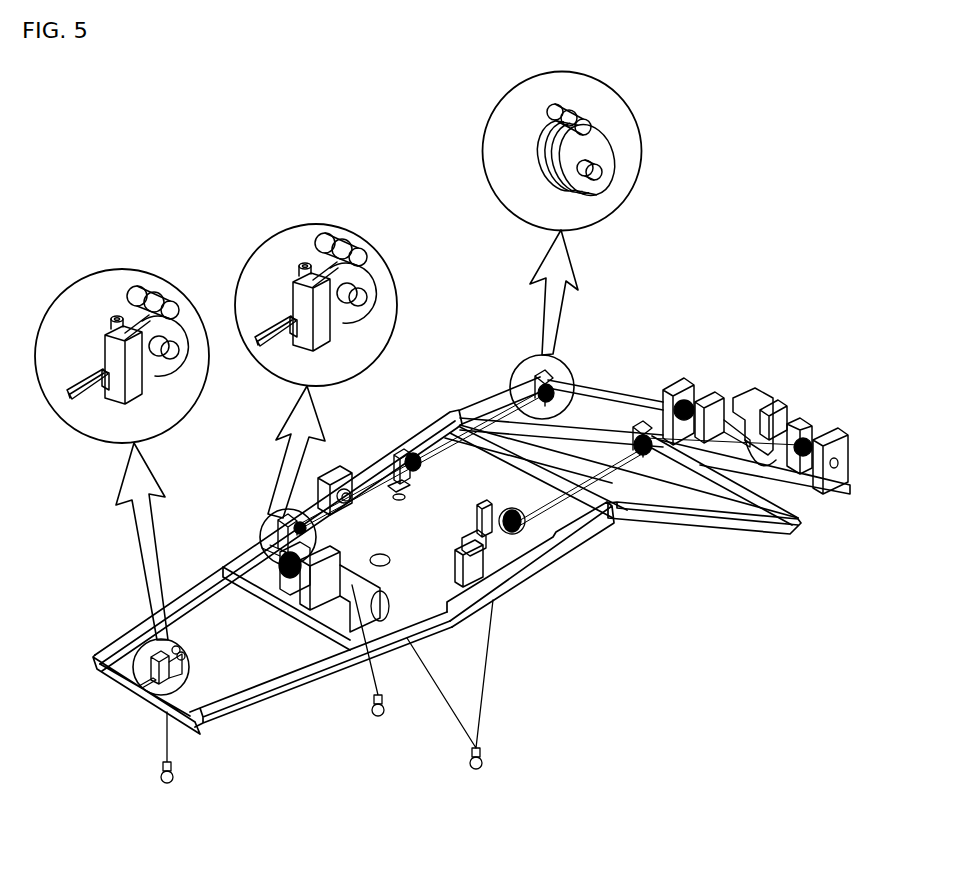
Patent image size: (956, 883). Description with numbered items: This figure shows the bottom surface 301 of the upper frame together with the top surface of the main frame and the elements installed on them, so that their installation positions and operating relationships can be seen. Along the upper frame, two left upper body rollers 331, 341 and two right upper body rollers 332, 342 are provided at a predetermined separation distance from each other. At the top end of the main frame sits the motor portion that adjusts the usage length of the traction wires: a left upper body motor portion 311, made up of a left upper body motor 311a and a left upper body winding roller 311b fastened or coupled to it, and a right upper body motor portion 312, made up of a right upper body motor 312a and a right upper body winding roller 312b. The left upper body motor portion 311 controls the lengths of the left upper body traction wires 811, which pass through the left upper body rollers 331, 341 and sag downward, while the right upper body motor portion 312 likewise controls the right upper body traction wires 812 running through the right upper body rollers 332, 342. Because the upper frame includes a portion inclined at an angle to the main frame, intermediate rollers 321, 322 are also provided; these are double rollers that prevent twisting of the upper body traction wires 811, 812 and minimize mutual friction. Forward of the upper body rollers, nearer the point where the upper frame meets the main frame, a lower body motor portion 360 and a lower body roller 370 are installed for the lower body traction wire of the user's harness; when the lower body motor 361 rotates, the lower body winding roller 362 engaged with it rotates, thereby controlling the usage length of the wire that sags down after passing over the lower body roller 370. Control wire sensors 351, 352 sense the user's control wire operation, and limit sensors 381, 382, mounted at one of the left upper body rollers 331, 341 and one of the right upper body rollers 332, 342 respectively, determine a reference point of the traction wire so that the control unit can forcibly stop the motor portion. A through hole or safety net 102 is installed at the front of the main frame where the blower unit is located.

The safety net 102 is at (800, 500).
The bottom surface of the upper frame 301 is at (447, 563).
The left upper body motor portion 311 is at (713, 392).
The left upper body motor 311a is at (727, 397).
The left upper body winding roller 311b is at (680, 395).
The right upper body motor portion 312 is at (802, 407).
The right upper body motor 312a is at (772, 398).
The right upper body winding roller 312b is at (817, 430).
The intermediate roller 321 is at (548, 375).
The intermediate roller 322 is at (652, 452).
The left upper body roller 331 is at (408, 450).
The right upper body roller 332 is at (515, 535).
The left upper body roller 341 is at (277, 535).
The right upper body roller 342 is at (458, 600).
The control wire sensor 351 is at (343, 478).
The control wire sensor 352 is at (473, 600).
The lower body motor portion 360 is at (334, 668).
The lower body motor 361 is at (330, 615).
The lower body winding roller 362 is at (228, 600).
The lower body roller 370 is at (178, 670).
The limit sensor 381 is at (385, 480).
The limit sensor 382 is at (500, 585).
The left upper body traction wire 811 is at (498, 410).
The right upper body traction wire 812 is at (550, 490).